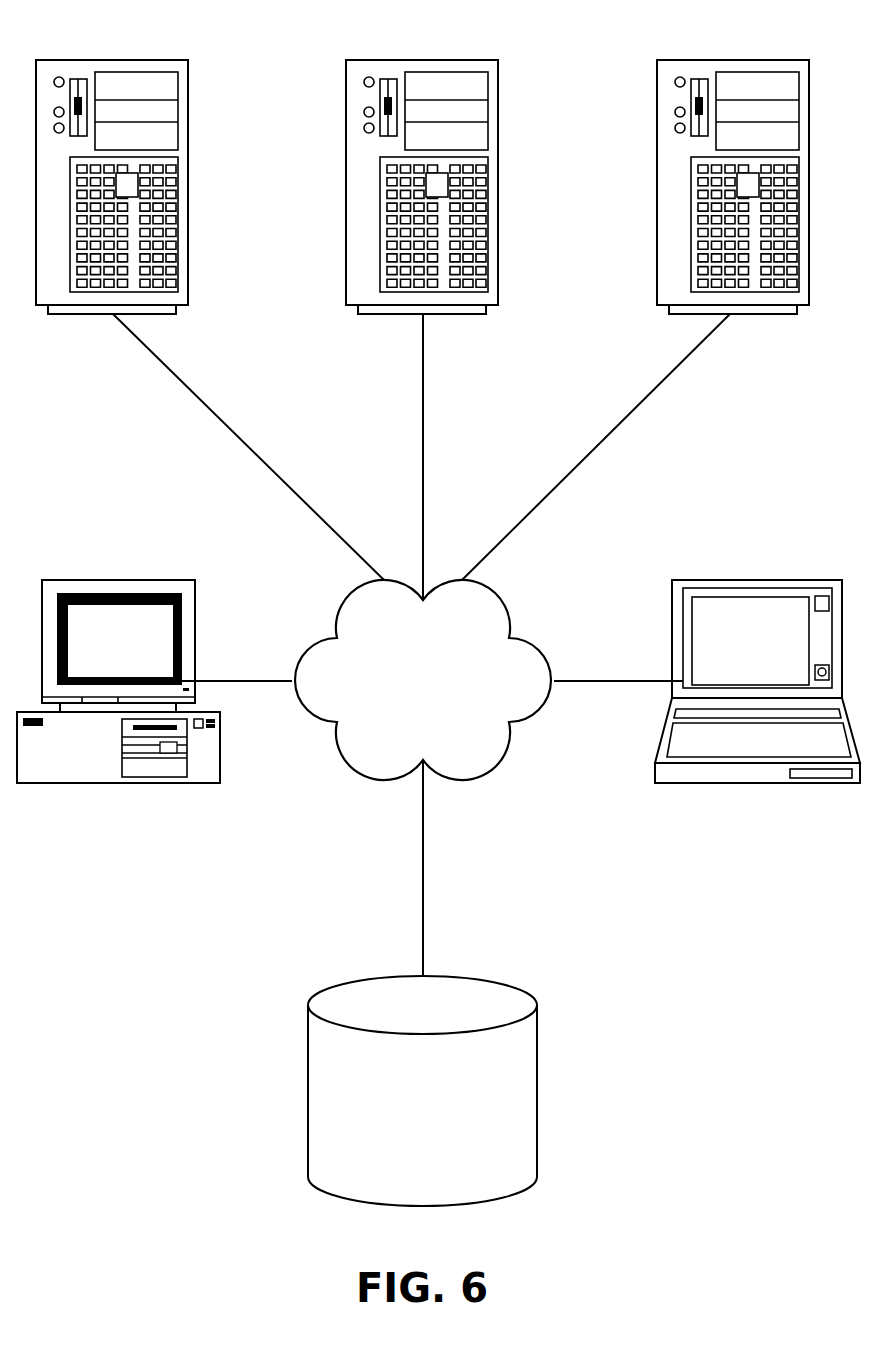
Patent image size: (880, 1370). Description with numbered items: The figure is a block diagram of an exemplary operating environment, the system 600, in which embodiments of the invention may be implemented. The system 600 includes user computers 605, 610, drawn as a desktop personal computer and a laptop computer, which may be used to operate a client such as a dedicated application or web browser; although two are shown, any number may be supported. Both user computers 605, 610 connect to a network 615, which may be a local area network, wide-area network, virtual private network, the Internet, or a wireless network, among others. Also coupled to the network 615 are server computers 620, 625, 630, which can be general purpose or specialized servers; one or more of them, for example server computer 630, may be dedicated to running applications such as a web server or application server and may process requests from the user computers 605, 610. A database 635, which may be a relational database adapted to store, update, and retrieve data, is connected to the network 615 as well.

The system 600 is at (226, 924).
The user computer 605 is at (203, 783).
The user computer 610 is at (803, 783).
The network 615 is at (498, 760).
The server computer 620 is at (163, 314).
The server computer 625 is at (475, 314).
The server computer 630 is at (785, 314).
The database 635 is at (500, 1197).